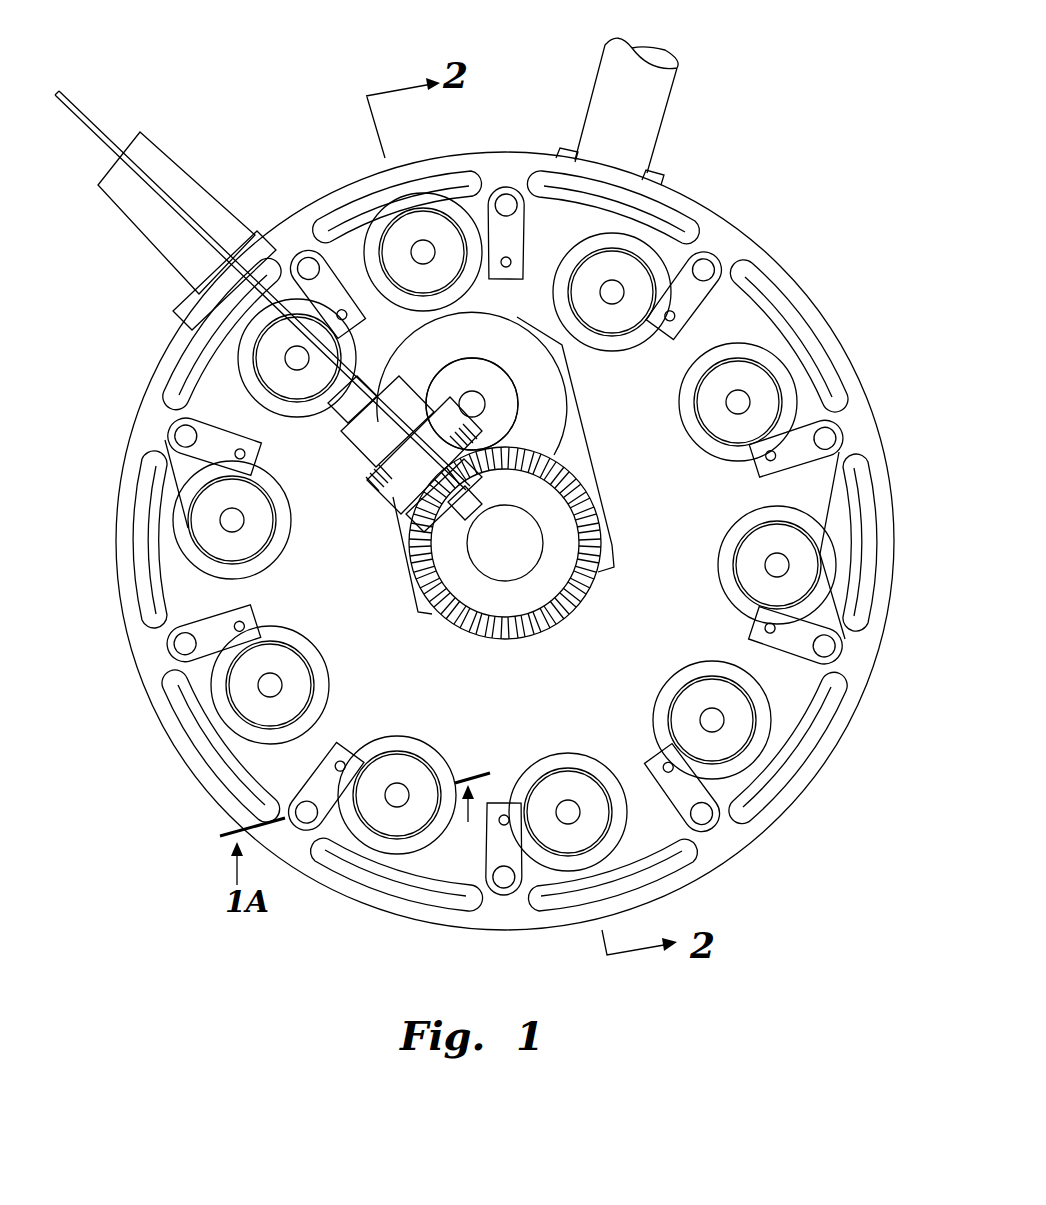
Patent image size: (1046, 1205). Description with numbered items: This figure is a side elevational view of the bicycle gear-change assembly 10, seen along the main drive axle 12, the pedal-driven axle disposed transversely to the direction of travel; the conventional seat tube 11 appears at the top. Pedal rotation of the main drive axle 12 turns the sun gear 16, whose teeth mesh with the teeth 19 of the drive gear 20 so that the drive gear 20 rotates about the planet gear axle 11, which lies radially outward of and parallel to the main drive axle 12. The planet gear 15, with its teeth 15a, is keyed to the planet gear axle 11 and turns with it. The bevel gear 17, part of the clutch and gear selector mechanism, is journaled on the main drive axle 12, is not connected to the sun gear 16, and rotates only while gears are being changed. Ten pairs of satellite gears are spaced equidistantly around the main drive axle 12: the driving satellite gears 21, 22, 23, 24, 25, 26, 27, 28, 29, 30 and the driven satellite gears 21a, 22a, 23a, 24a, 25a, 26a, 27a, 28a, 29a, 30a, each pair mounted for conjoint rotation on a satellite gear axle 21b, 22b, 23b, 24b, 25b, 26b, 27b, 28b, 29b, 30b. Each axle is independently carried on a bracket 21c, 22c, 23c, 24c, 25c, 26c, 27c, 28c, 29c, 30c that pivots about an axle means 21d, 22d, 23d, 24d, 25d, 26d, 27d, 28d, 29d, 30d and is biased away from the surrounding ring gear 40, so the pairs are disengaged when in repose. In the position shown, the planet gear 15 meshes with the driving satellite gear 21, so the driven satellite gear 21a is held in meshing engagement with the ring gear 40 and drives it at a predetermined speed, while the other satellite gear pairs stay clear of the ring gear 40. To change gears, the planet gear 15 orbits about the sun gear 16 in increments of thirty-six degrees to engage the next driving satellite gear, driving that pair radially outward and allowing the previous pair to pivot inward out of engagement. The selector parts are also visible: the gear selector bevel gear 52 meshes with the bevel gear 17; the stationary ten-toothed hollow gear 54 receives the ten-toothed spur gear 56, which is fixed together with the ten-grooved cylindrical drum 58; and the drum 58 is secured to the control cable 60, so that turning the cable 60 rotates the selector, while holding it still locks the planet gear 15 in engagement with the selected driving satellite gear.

The assembly 10 is at (752, 50).
The planet gear axle 11 is at (640, 137).
The main drive axle 12 is at (520, 560).
The planet gear 15 is at (470, 355).
The teeth of planet gear 15a is at (578, 422).
The sun gear 16 is at (612, 530).
The bevel gear 17 is at (583, 577).
The teeth of drive gear 19 is at (519, 396).
The drive gear 20 is at (497, 418).
The driving satellite gear 21 is at (382, 210).
The driven satellite gear 21a is at (455, 237).
The satellite gear axle 21b is at (423, 250).
The bracket 21c is at (500, 232).
The axle means 21d is at (512, 198).
The driving satellite gear 22 is at (585, 247).
The driven satellite gear 22a is at (628, 272).
The satellite gear axle 22b is at (618, 292).
The bracket 22c is at (712, 262).
The axle means 22d is at (718, 275).
The driving satellite gear 23 is at (688, 377).
The driven satellite gear 23a is at (745, 370).
The satellite gear axle 23b is at (733, 403).
The bracket 23c is at (793, 403).
The axle means 23d is at (838, 438).
The driving satellite gear 24 is at (728, 543).
The driven satellite gear 24a is at (783, 545).
The satellite gear axle 24b is at (772, 558).
The bracket 24c is at (800, 613).
The axle means 24d is at (835, 660).
The driving satellite gear 25 is at (670, 676).
The driven satellite gear 25a is at (748, 718).
The satellite gear axle 25b is at (715, 725).
The bracket 25c is at (670, 714).
The axle means 25d is at (705, 830).
The driving satellite gear 26 is at (578, 775).
The driven satellite gear 26a is at (585, 780).
The satellite gear axle 26b is at (583, 811).
The bracket 26c is at (540, 870).
The axle means 26d is at (505, 895).
The driving satellite gear 27 is at (400, 737).
The driven satellite gear 27a is at (425, 783).
The satellite gear axle 27b is at (398, 800).
The bracket 27c is at (330, 850).
The axle means 27d is at (300, 797).
The driving satellite gear 28 is at (330, 667).
The driven satellite gear 28a is at (280, 660).
The satellite gear axle 28b is at (270, 687).
The bracket 28c is at (210, 727).
The axle means 28d is at (172, 645).
The driving satellite gear 29 is at (195, 573).
The driven satellite gear 29a is at (200, 544).
The satellite gear axle 29b is at (220, 520).
The bracket 29c is at (190, 492).
The axle means 29d is at (180, 425).
The driving satellite gear 30 is at (250, 377).
The driven satellite gear 30a is at (236, 352).
The satellite gear axle 30b is at (262, 358).
The bracket 30c is at (308, 228).
The axle means 30d is at (284, 250).
The ring gear 40 is at (338, 190).
The gear selector bevel gear 52 is at (408, 516).
The ten-toothed hollow gear 54 is at (395, 488).
The ten-toothed spur gear 56 is at (400, 470).
The cylindrical drum 58 is at (385, 435).
The control cable 60 is at (98, 130).